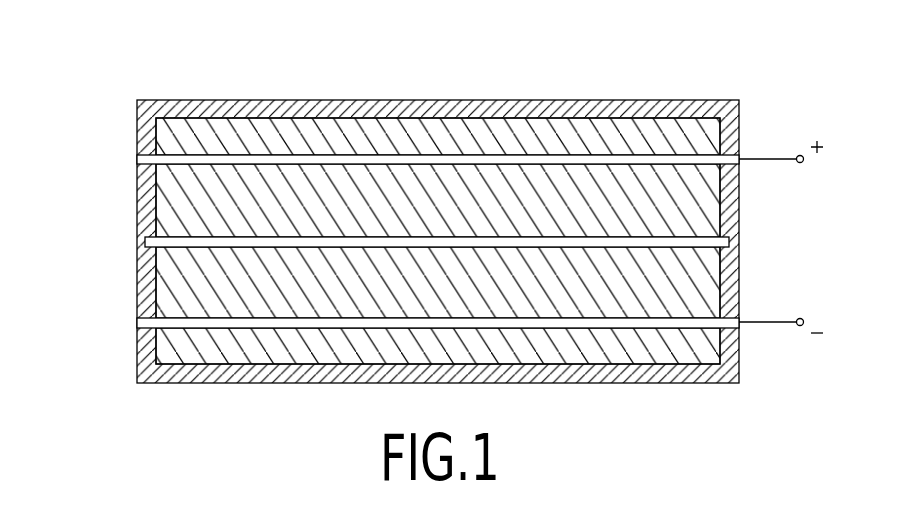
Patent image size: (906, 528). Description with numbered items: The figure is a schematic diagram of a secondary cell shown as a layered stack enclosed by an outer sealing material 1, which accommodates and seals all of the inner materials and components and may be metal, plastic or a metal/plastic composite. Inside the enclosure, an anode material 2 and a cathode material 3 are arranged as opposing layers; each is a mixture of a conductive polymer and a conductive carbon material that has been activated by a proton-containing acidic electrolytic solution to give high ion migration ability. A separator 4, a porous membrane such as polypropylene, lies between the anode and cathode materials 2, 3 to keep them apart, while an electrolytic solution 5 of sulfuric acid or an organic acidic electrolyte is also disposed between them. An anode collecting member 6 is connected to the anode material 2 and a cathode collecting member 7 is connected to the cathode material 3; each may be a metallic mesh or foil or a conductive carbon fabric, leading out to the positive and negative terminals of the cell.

The outer sealing material 1 is at (240, 110).
The anode material 2 is at (577, 178).
The cathode material 3 is at (652, 300).
The separator 4 is at (200, 242).
The electrolytic solution 5 is at (173, 183).
The anode collecting member 6 is at (340, 163).
The cathode collecting member 7 is at (227, 325).